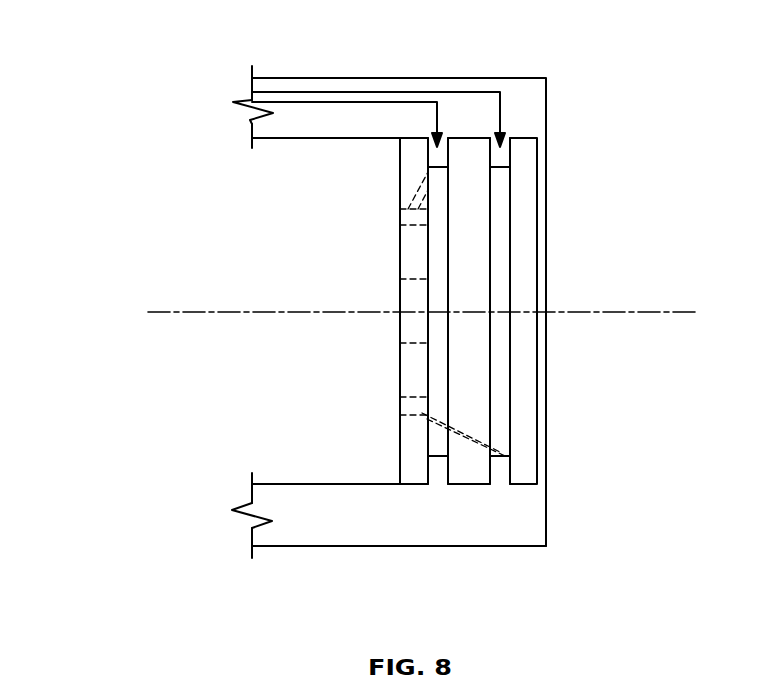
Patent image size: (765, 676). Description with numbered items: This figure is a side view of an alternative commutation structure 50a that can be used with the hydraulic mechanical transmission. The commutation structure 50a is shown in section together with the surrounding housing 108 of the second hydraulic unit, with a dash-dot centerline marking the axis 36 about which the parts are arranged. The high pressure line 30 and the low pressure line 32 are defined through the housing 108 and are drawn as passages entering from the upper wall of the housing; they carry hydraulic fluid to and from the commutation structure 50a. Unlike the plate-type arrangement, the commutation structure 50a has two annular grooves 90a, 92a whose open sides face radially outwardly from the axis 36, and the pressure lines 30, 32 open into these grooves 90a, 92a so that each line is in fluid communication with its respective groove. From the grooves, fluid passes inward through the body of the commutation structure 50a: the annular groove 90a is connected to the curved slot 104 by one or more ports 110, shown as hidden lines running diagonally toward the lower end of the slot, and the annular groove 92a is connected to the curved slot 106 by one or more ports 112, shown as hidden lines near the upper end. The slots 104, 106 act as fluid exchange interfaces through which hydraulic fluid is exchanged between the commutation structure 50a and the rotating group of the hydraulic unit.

The commutation structure 50a is at (155, 45).
The high pressure line 30 is at (500, 111).
The low pressure line 32 is at (295, 105).
The axis 36 is at (647, 312).
The annular groove 90a is at (495, 157).
The annular groove 92a is at (442, 157).
The curved slot 104 is at (400, 358).
The curved slot 106 is at (400, 250).
The housing 108 is at (393, 547).
The port 110 is at (470, 437).
The port 112 is at (422, 190).